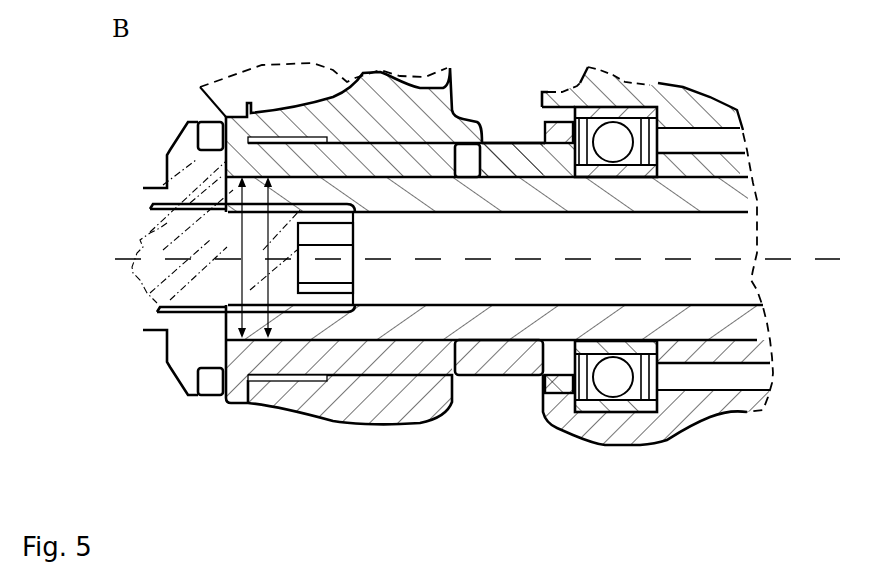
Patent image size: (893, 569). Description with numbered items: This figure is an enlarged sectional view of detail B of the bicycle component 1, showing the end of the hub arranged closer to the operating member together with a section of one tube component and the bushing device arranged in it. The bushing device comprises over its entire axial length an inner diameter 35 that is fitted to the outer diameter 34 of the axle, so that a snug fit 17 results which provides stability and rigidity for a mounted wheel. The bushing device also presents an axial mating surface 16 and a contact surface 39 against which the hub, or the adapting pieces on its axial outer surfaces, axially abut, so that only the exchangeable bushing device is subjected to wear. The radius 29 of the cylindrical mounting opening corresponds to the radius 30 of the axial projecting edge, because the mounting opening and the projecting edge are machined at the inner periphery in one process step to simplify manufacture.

The bicycle component 1 is at (147, 189).
The axial mating surface 16 is at (440, 147).
The snug fit 17 is at (409, 150).
The radius of the cylindrical mounting opening 29 is at (413, 230).
The radius of the axial projecting edge 30 is at (473, 152).
The outer diameter of the axle 34 is at (233, 235).
The inner diameter of the bushing device 35 is at (135, 268).
The contact surface 39 is at (464, 157).